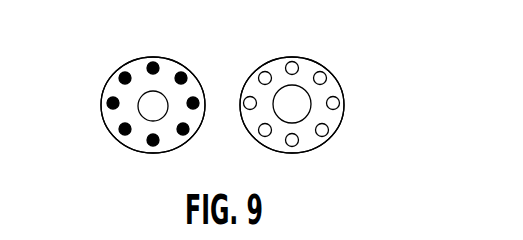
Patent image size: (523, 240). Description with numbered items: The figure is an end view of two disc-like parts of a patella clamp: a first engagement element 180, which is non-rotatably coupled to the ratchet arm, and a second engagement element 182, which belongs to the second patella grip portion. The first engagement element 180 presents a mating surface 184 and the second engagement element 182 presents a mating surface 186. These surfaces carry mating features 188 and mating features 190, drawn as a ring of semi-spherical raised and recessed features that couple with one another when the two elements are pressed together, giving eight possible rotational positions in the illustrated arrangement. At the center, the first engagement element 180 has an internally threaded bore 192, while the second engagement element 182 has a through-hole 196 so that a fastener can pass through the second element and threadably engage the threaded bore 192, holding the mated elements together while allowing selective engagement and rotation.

The first engagement element 180 is at (118, 140).
The second engagement element 182 is at (327, 148).
The mating surface 184 is at (112, 115).
The mating surface 186 is at (313, 62).
The mating features 188 is at (118, 72).
The mating features 190 is at (263, 70).
The internally threaded bore 192 is at (147, 91).
The through-hole 196 is at (311, 97).